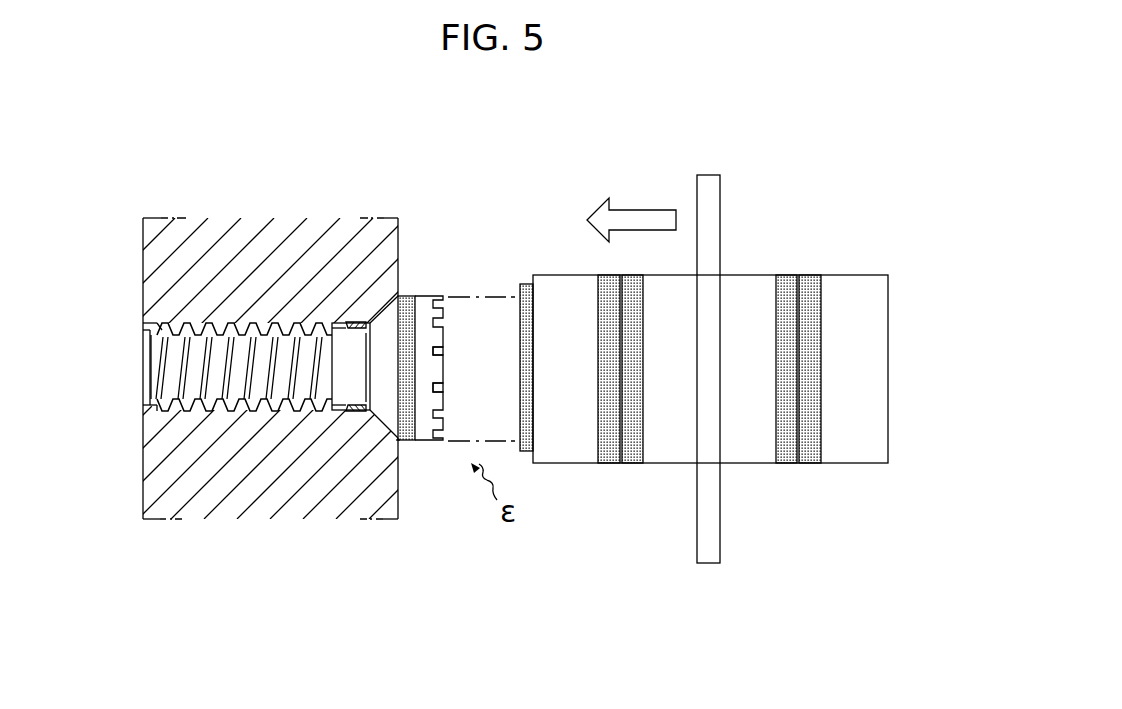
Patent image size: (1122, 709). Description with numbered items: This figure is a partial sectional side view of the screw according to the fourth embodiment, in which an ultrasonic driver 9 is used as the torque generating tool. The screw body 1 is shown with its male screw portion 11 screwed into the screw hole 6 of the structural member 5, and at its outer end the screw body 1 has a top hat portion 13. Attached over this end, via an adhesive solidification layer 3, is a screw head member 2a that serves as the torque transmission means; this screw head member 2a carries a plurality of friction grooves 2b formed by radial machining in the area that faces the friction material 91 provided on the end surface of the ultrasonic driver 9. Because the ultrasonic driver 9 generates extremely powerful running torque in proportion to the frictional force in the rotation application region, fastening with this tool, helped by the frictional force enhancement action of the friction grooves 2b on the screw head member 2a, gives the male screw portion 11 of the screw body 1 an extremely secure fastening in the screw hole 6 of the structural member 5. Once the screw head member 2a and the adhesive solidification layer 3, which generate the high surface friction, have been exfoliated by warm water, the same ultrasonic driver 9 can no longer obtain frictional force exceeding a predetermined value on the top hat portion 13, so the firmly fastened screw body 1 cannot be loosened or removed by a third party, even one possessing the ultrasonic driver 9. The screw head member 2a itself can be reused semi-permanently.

The screw body 1 is at (140, 374).
The structural member 5 is at (143, 235).
The male screw portion 11 is at (152, 334).
The top hat portion 13 is at (376, 320).
The adhesive solidification layer 3 is at (410, 296).
The screw head member 2a is at (430, 296).
The friction grooves 2b is at (443, 387).
The screw hole 6 is at (402, 442).
The friction material 91 is at (525, 284).
The ultrasonic driver 9 is at (867, 271).